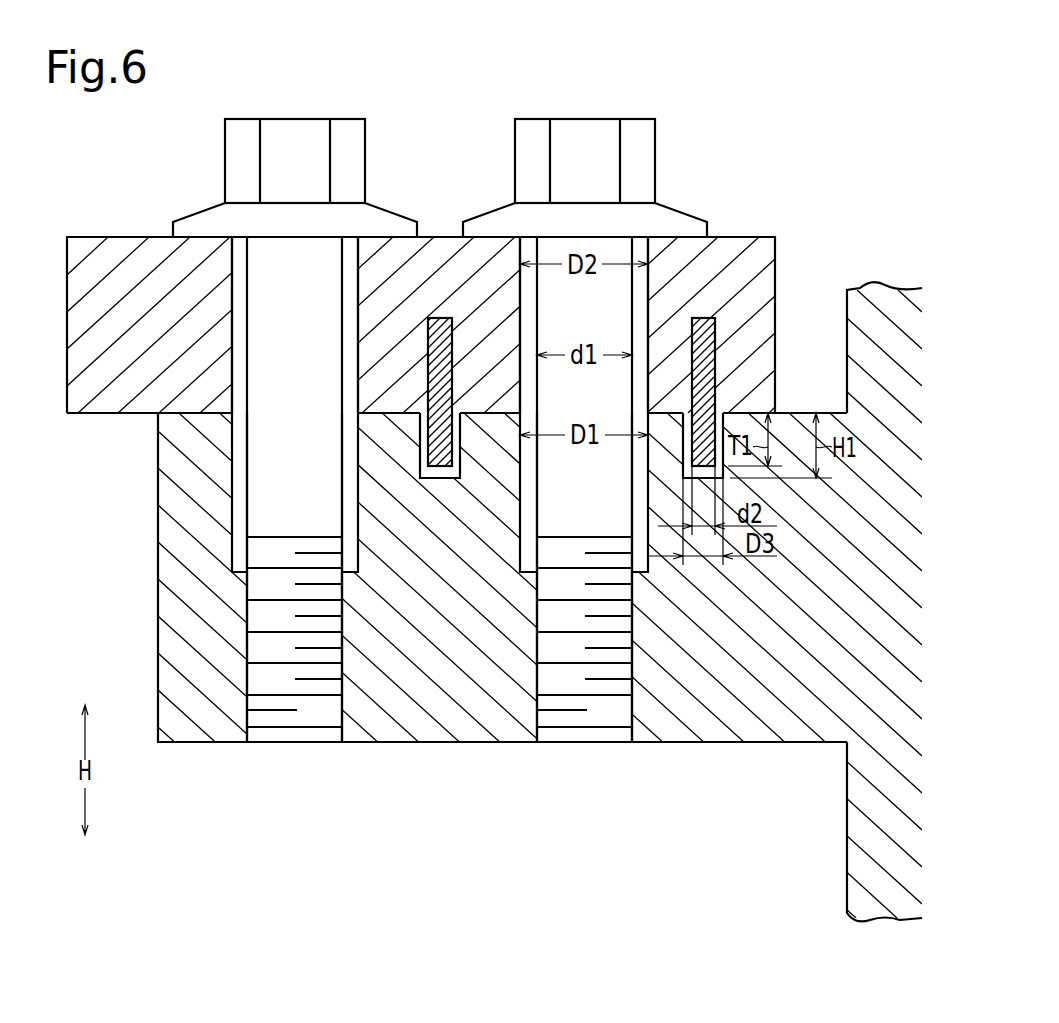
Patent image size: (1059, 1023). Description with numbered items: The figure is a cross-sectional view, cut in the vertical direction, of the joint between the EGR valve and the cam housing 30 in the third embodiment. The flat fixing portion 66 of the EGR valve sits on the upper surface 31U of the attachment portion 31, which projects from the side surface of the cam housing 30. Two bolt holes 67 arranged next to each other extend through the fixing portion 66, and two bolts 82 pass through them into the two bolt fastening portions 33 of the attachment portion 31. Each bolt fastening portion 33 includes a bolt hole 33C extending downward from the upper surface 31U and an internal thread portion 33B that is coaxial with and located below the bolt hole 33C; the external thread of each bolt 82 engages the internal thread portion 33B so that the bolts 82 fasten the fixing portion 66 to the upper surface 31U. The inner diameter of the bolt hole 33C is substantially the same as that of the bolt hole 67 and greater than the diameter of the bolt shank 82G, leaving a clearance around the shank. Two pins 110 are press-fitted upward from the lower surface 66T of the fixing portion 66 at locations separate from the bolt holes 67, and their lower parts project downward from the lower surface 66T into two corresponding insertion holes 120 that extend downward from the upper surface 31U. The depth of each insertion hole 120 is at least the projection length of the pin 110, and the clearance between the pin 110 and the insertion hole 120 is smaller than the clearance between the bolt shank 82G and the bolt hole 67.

The fixing portion 66 is at (67, 298).
The lower surface of the fixing portion 66T is at (92, 413).
The bolt hole 67 is at (232, 287).
The bolt 82 is at (225, 177).
The bolt shank 82G is at (262, 517).
The bolt fastening portion 33 is at (343, 605).
The bolt hole 33C is at (230, 458).
The internal thread portion 33B is at (258, 728).
The attachment portion 31 is at (158, 590).
The upper surface of the attachment portion 31U is at (811, 413).
The cam housing 30 is at (847, 827).
The pin 110 is at (428, 345).
The insertion hole 120 is at (421, 440).